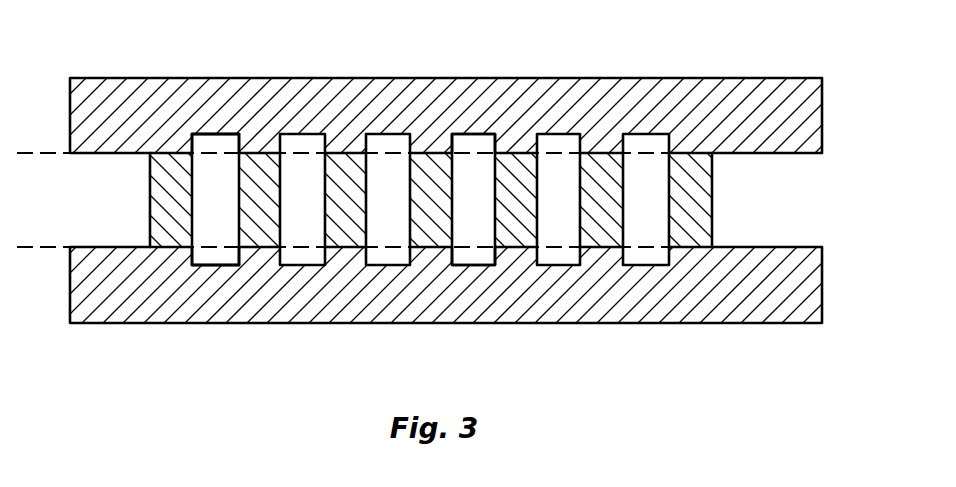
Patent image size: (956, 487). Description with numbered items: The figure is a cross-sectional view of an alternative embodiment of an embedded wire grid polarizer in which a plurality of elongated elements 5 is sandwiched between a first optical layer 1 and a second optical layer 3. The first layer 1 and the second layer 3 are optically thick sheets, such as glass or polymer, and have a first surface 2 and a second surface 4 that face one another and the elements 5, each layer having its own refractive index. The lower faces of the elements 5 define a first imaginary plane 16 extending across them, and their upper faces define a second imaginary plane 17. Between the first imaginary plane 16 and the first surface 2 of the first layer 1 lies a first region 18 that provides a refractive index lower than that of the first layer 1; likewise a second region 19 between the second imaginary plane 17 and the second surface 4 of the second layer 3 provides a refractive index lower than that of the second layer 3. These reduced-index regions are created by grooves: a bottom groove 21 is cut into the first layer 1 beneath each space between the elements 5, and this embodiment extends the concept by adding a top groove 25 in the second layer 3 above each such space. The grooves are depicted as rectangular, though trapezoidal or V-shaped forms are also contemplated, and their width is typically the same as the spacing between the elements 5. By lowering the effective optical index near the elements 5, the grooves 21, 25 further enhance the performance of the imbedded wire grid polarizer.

The first optical layer 1 is at (668, 310).
The first surface 2 is at (215, 265).
The second optical layer 3 is at (312, 97).
The second surface 4 is at (213, 134).
The elongated elements 5 is at (597, 173).
The first imaginary plane 16 is at (28, 245).
The second imaginary plane 17 is at (45, 155).
The first region 18 is at (226, 255).
The second region 19 is at (226, 145).
The bottom groove 21 is at (475, 260).
The top groove 25 is at (472, 145).